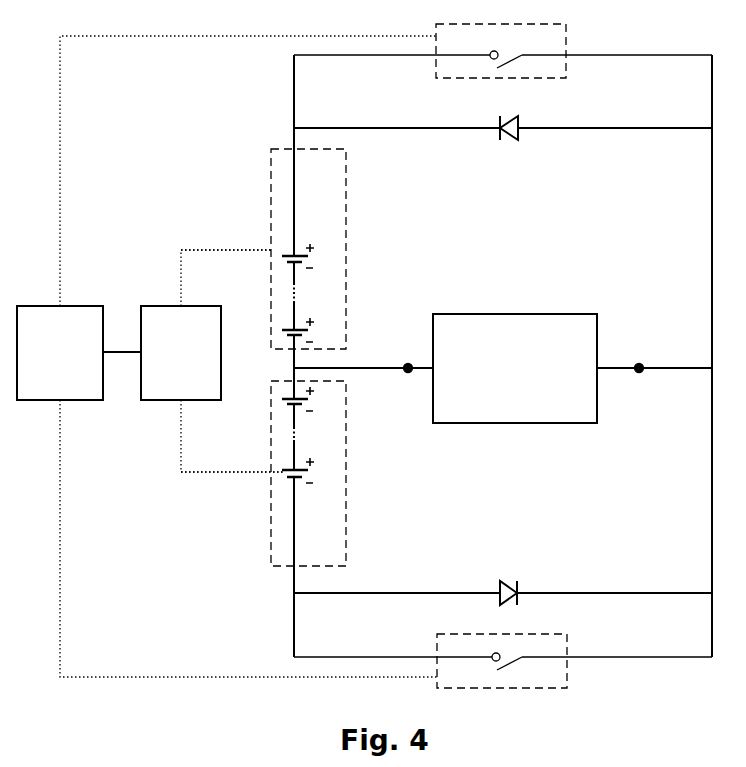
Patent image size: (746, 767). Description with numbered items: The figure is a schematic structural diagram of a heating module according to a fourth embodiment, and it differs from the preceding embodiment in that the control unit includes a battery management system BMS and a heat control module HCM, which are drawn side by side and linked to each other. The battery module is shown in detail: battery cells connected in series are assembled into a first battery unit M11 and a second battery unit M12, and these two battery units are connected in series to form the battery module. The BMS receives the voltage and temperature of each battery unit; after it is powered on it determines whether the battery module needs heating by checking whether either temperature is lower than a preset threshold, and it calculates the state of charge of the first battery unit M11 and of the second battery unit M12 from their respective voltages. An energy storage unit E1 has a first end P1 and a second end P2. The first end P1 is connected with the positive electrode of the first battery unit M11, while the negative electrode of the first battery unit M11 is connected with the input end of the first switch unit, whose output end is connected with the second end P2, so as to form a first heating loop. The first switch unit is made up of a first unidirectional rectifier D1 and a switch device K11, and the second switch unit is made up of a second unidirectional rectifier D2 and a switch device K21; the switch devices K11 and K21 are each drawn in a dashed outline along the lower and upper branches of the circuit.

The heat control module HCM is at (227, 356).
The battery management system BMS is at (212, 361).
The second battery unit M12 is at (309, 249).
The first battery unit M11 is at (309, 473).
The switch device of the second switch unit K21 is at (525, 51).
The switch device of the first switch unit K11 is at (528, 665).
The second unidirectional rectifier D2 is at (530, 119).
The first unidirectional rectifier D1 is at (530, 604).
The first end of the energy storage unit P1 is at (413, 389).
The second end of the energy storage unit P2 is at (639, 389).
The energy storage unit E1 is at (515, 368).